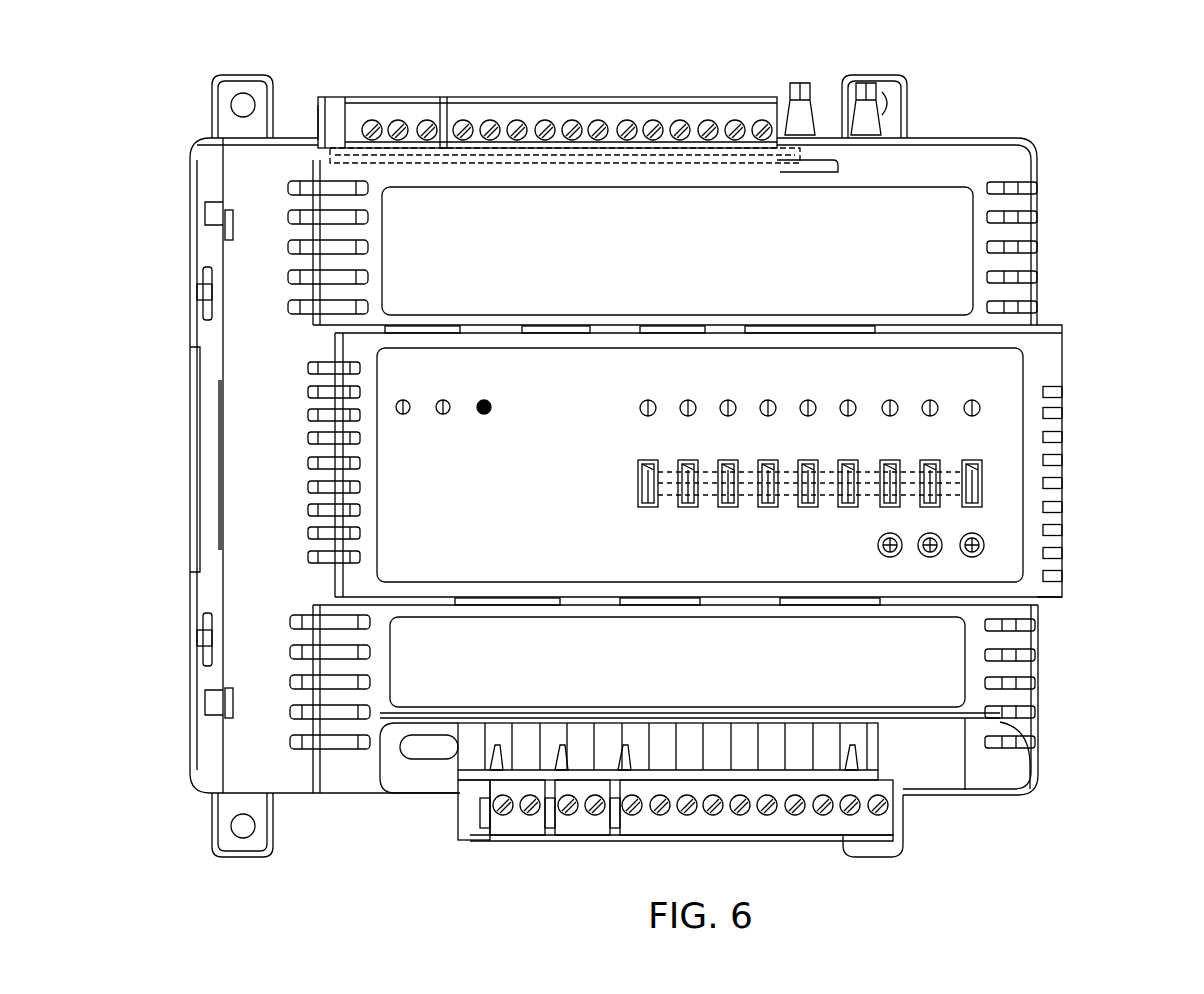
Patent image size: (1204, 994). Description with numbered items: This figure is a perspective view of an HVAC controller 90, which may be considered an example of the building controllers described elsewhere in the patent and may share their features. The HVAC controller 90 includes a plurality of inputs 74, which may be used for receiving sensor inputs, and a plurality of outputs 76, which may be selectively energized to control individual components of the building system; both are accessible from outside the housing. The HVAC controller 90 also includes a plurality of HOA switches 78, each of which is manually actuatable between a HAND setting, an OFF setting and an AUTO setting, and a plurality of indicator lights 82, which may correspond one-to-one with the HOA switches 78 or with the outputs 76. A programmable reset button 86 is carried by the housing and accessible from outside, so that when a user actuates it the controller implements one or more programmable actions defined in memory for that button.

The HVAC controller 90 is at (626, 466).
The outputs 76 is at (596, 80).
The inputs 74 is at (778, 860).
The indicator lights 82 is at (992, 405).
The HOA switches 78 is at (998, 474).
The programmable reset button 86 is at (482, 412).